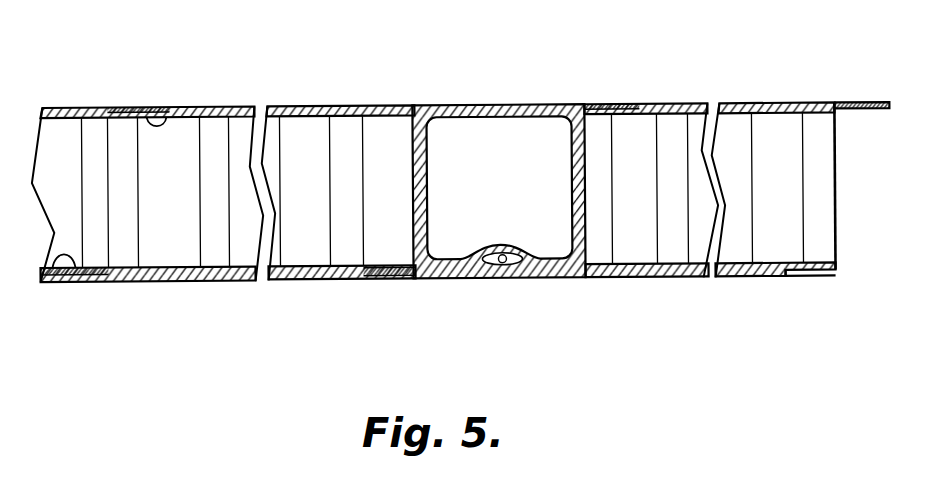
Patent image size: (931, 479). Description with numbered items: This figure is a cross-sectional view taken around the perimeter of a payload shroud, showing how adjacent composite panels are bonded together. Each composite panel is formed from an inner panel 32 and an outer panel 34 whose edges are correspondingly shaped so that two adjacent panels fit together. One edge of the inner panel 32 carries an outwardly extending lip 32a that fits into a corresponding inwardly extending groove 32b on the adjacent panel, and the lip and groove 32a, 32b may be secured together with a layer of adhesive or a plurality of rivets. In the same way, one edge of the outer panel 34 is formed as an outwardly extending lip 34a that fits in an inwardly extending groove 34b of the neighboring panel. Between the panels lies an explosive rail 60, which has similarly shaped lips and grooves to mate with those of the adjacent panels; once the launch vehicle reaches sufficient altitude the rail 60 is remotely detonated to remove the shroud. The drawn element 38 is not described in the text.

The inner panel 32 is at (670, 105).
The outwardly extending lip 32a is at (123, 107).
The inwardly extending groove 32b is at (178, 112).
The outer panel 34 is at (307, 282).
The outwardly extending lip 34a is at (85, 285).
The inwardly extending groove 34b is at (45, 283).
The ribs 38 is at (338, 165).
The explosive rail 60 is at (522, 105).